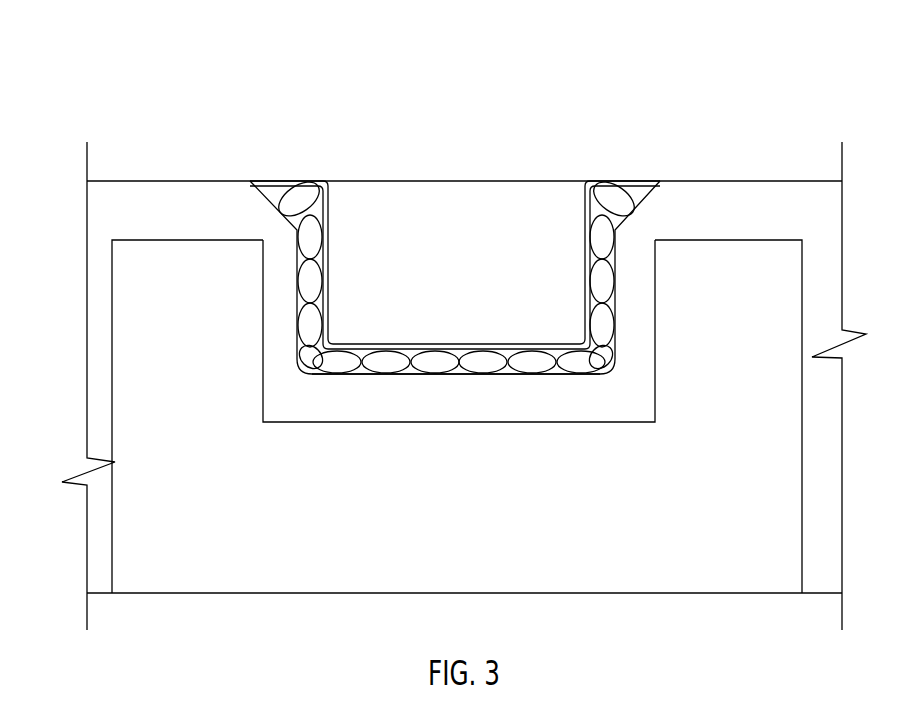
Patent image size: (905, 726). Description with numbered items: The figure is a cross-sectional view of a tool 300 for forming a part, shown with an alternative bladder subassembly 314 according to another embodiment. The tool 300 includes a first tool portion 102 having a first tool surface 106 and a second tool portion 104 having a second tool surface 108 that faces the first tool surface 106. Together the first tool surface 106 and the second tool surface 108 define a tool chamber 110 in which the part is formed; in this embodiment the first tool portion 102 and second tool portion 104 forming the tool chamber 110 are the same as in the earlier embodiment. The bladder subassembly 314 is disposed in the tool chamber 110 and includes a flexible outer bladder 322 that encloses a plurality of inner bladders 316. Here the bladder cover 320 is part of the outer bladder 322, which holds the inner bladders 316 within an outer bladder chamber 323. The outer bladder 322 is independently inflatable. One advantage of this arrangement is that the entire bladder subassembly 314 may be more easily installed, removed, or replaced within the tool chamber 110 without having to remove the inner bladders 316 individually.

The tool 300 is at (109, 132).
The first tool portion 102 is at (442, 284).
The second tool portion 104 is at (645, 502).
The first tool surface 106 is at (600, 220).
The second tool surface 108 is at (655, 313).
The tool chamber 110 is at (442, 412).
The bladder subassembly 314 is at (298, 273).
The inner bladders 316 is at (318, 362).
The bladder cover 320 is at (313, 370).
The outer bladder 322 is at (302, 183).
The outer bladder chamber 323 is at (298, 302).